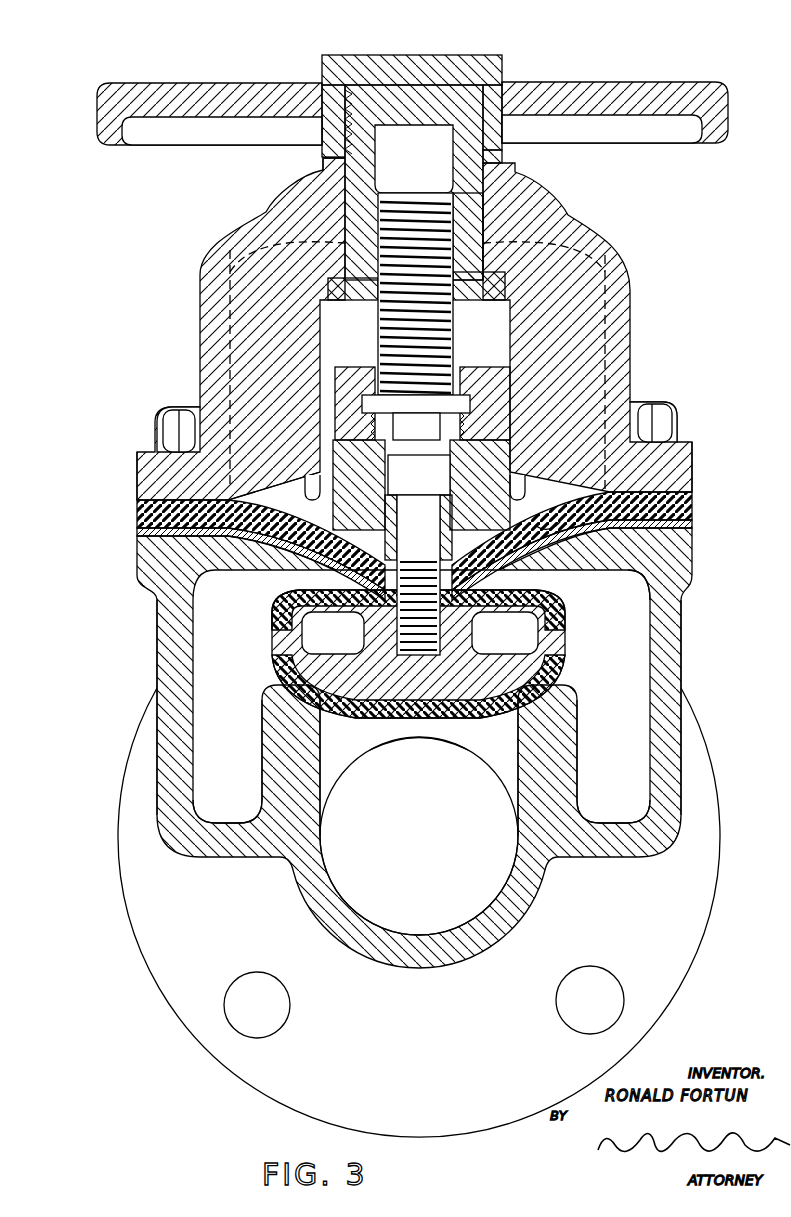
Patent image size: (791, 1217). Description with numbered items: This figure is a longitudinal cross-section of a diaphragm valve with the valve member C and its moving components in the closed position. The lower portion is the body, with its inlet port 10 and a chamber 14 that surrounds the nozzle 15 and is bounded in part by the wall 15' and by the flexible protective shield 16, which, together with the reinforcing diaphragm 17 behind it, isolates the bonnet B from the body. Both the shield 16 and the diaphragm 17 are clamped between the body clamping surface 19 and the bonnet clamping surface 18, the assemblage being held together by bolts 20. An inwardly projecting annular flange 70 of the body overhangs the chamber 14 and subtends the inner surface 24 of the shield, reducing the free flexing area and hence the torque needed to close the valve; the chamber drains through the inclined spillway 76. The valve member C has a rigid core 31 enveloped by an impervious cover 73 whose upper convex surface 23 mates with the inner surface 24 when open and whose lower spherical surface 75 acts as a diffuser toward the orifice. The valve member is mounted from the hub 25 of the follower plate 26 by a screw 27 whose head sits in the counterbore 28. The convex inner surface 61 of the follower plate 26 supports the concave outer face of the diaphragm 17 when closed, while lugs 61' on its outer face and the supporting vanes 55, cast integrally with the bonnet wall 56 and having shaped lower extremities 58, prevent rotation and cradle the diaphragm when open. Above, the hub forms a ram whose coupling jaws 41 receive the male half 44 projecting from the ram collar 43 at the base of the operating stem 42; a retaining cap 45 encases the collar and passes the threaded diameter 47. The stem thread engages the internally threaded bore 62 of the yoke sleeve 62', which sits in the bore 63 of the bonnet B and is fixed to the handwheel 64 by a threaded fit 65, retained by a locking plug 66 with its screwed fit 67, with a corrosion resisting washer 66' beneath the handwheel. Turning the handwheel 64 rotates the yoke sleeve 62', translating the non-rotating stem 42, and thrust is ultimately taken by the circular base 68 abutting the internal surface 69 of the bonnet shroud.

The inlet port 10 is at (419, 836).
The chamber 14 is at (421, 752).
The nozzle 15 is at (418, 768).
The wall 15' is at (419, 707).
The protective shield 16 is at (692, 526).
The diaphragm 17 is at (692, 503).
The clamping surface 18 is at (690, 486).
The clamping surface 19 is at (692, 538).
The bolts 20 is at (665, 420).
The upper convex surface 23 is at (288, 588).
The inner surface 24 is at (553, 560).
The hub 25 is at (359, 485).
The follower plate 26 is at (240, 492).
The screw 27 is at (419, 475).
The counterbore 28 is at (480, 485).
The rigid core 31 is at (490, 634).
The coupling jaws 41 is at (377, 427).
The operating stem 42 is at (402, 193).
The ram collar 43 is at (416, 404).
The male half of universal coupling 44 is at (416, 425).
The retaining cap 45 is at (466, 368).
The threaded diameter 47 is at (455, 340).
The supporting vanes 55 is at (312, 488).
The bonnet wall 56 is at (598, 336).
The lower extremities of vanes 58 is at (527, 486).
The inner surface of follower plate 61 is at (536, 516).
The lugs 61' is at (417, 370).
The bore of yoke sleeve 62 is at (414, 182).
The yoke sleeve 62' is at (488, 236).
The bore of bonnet 63 is at (322, 178).
The handwheel 64 is at (728, 101).
The threaded fit 65 is at (353, 128).
The locking plug 66 is at (429, 94).
The corrosion resisting washer 66' is at (517, 155).
The internally screwed fit 67 is at (430, 36).
The circular base 68 is at (333, 299).
The internal surface of bonnet shroud 69 is at (500, 296).
The annular flange 70 is at (612, 568).
The cover 73 is at (468, 706).
The lower spherical surface 75 is at (408, 737).
The spillway 76 is at (421, 794).
The bonnet B is at (610, 250).
The valve member C is at (272, 655).